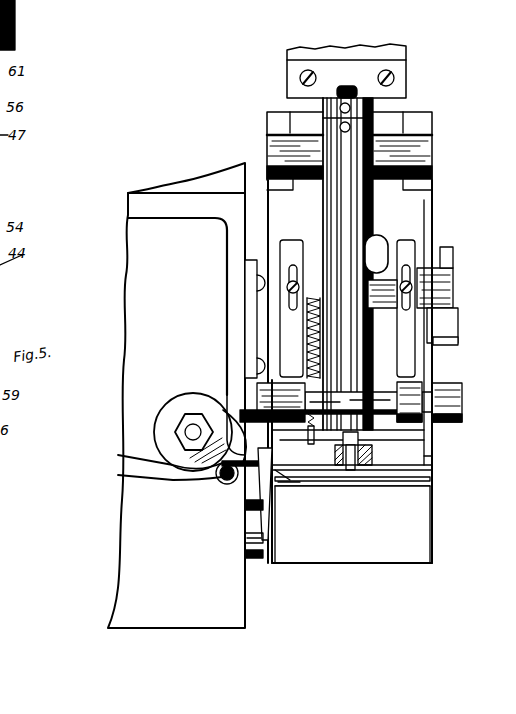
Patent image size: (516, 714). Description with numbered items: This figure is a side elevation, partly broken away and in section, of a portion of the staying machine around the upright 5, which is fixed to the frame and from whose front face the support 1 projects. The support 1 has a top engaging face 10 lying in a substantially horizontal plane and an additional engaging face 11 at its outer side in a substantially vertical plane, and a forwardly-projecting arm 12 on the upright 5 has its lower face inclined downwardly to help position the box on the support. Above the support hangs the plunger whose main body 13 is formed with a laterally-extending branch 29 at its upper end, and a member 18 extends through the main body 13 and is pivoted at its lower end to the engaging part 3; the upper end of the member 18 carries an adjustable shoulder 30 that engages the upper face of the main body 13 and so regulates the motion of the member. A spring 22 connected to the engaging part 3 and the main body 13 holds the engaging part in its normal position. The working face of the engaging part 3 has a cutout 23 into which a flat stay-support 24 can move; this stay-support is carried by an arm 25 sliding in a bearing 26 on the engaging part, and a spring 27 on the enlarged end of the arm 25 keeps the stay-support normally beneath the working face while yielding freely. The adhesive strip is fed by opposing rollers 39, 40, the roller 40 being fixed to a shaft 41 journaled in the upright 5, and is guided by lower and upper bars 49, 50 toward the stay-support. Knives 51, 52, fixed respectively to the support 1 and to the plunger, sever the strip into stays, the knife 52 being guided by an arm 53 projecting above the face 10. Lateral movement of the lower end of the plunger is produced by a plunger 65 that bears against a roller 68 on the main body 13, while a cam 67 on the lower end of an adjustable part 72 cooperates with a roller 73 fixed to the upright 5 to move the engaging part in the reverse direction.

The support 1 is at (372, 537).
The engaging part 3 is at (410, 455).
The upright 5 is at (135, 395).
The engaging face 10 is at (432, 490).
The engaging face 11 is at (403, 530).
The forwardly-projecting arm 12 is at (258, 496).
The main body 13 is at (343, 205).
The member 18 is at (345, 86).
The spring 22 is at (307, 318).
The cutout 23 is at (415, 468).
The stay-support 24 is at (428, 479).
The arm 25 is at (362, 460).
The bearing 26 is at (370, 452).
The spring 27 is at (340, 437).
The laterally-extending branch 29 is at (378, 152).
The adjustable shoulder 30 is at (322, 125).
The roller 39 is at (222, 482).
The roller 40 is at (173, 418).
The shaft 41 is at (185, 436).
The lower bar 49 is at (145, 478).
The upper bar 50 is at (233, 420).
The knife 51 is at (283, 475).
The knife 52 is at (295, 475).
The arm 53 is at (243, 505).
The plunger 65 is at (440, 325).
The cam 67 is at (440, 343).
The roller 68 is at (435, 295).
The part 72 is at (290, 252).
The roller 73 is at (268, 393).